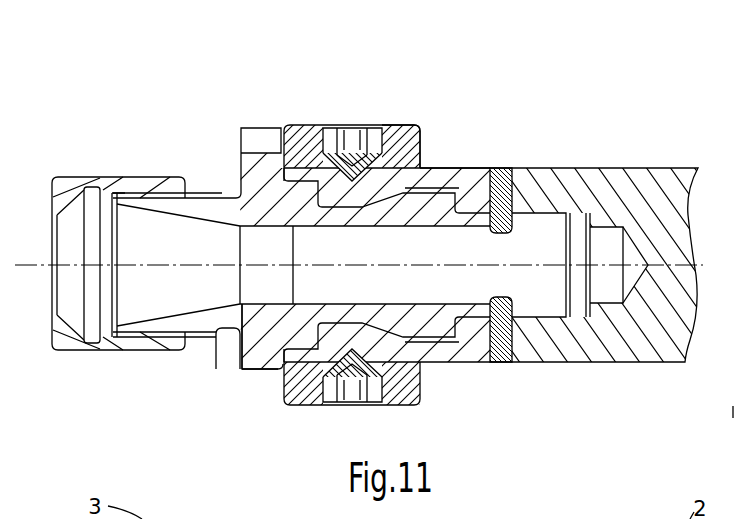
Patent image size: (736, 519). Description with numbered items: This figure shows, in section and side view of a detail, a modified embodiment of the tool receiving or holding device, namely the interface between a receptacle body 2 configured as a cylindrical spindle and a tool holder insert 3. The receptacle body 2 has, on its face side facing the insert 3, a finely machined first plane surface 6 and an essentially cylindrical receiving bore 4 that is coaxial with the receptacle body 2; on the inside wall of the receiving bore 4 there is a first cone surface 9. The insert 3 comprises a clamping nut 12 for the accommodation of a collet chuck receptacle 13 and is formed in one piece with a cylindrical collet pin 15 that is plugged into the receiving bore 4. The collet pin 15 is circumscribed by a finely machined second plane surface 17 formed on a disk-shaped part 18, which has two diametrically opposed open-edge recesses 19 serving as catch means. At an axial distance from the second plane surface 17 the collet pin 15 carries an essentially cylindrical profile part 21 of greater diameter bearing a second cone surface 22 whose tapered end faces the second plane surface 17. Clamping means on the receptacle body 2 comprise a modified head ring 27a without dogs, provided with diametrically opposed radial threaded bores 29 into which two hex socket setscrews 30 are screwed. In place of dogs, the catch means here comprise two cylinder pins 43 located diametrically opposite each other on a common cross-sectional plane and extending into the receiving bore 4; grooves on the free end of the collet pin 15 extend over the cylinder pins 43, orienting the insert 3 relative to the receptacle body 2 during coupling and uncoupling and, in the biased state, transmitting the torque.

The receptacle body 2 is at (653, 206).
The insert 3 is at (210, 162).
The receiving bore 4 is at (547, 227).
The first plane surface 6 is at (305, 126).
The first cone surface 9 is at (430, 154).
The clamping nut 12 is at (133, 348).
The collet chuck receptacle 13 is at (217, 364).
The collet pin 15 is at (334, 210).
The second plane surface 17 is at (276, 369).
The disk-shaped part 18 is at (260, 362).
The open-edge recesses 19 is at (735, 412).
The profile part 21 is at (421, 213).
The second cone surface 22 is at (456, 362).
The head ring 27a is at (420, 126).
The threaded bores 29 is at (390, 126).
The hex socket setscrew 30 is at (334, 126).
The cylinder pins 43 is at (508, 168).